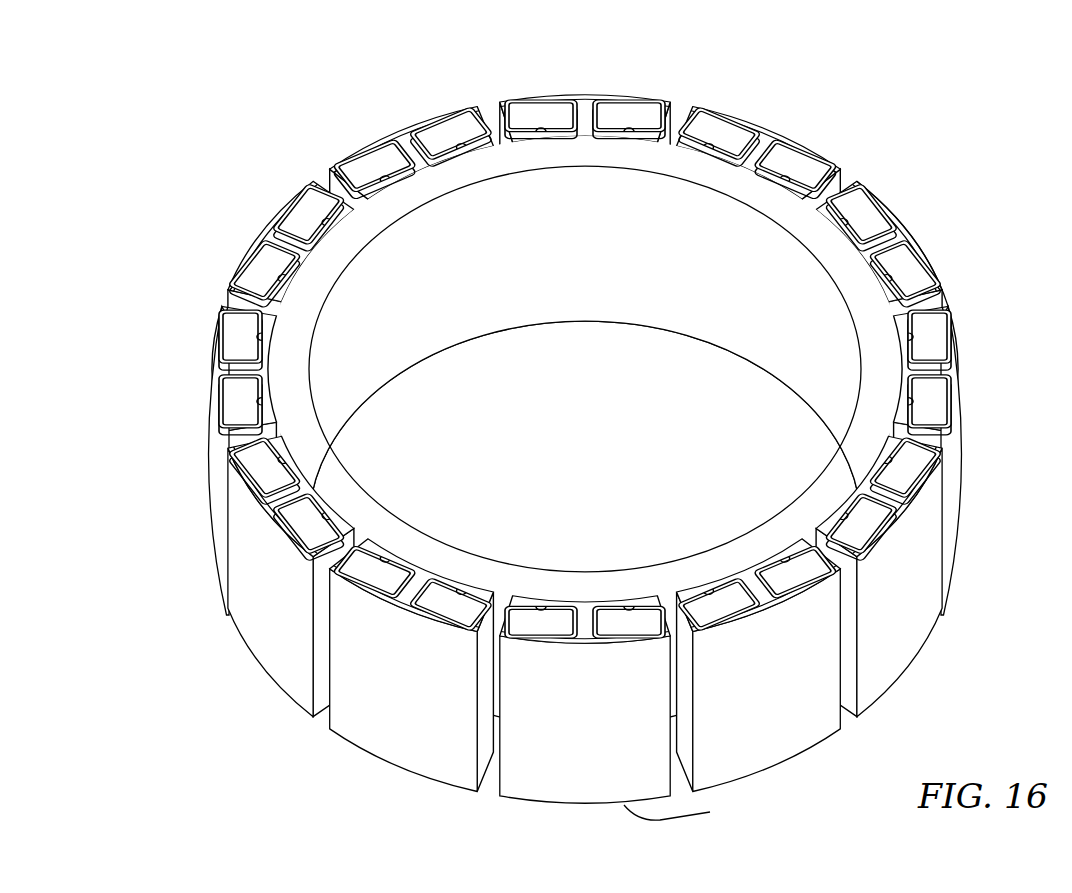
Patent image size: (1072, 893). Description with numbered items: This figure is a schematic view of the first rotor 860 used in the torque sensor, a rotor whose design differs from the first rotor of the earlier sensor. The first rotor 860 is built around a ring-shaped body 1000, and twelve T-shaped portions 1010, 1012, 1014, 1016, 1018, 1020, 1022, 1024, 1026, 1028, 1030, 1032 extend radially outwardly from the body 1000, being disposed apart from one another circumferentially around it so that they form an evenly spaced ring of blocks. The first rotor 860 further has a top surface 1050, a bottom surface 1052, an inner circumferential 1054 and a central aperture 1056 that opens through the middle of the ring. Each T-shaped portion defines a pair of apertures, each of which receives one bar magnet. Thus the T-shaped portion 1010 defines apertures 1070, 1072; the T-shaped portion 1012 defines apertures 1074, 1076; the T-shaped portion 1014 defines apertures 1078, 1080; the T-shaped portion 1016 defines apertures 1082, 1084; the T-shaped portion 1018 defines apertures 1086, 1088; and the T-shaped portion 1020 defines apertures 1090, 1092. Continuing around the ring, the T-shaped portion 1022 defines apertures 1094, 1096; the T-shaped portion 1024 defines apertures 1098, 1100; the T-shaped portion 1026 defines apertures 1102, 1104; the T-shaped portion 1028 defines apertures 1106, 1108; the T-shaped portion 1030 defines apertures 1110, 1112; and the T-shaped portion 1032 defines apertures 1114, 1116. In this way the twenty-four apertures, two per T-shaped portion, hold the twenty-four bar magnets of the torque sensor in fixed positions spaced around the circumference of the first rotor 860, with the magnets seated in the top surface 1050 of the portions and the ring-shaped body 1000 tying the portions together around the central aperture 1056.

The first rotor 860 is at (581, 441).
The ring-shaped body 1000 is at (658, 160).
The T-shaped portion 1010 is at (767, 140).
The T-shaped portion 1012 is at (917, 257).
The T-shaped portion 1014 is at (950, 372).
The T-shaped portion 1016 is at (890, 517).
The T-shaped portion 1018 is at (740, 620).
The T-shaped portion 1020 is at (562, 642).
The T-shaped portion 1022 is at (410, 608).
The T-shaped portion 1024 is at (270, 507).
The T-shaped portion 1026 is at (217, 383).
The T-shaped portion 1028 is at (255, 255).
The T-shaped portion 1030 is at (400, 142).
The T-shaped portion 1032 is at (582, 103).
The top surface 1050 is at (857, 200).
The bottom surface 1052 is at (705, 812).
The inner circumferential 1054 is at (550, 308).
The central aperture 1056 is at (585, 422).
The aperture 1070 is at (708, 146).
The aperture 1072 is at (786, 180).
The aperture 1074 is at (842, 221).
The aperture 1076 is at (888, 279).
The aperture 1078 is at (909, 336).
The aperture 1080 is at (909, 402).
The aperture 1082 is at (888, 459).
The aperture 1084 is at (842, 517).
The aperture 1086 is at (786, 558).
The aperture 1088 is at (708, 592).
The aperture 1090 is at (631, 607).
The aperture 1092 is at (539, 607).
The aperture 1094 is at (462, 592).
The aperture 1096 is at (384, 558).
The aperture 1098 is at (328, 517).
The aperture 1100 is at (282, 459).
The aperture 1102 is at (261, 402).
The aperture 1104 is at (261, 336).
The aperture 1106 is at (282, 279).
The aperture 1108 is at (328, 221).
The aperture 1110 is at (384, 180).
The aperture 1112 is at (462, 146).
The aperture 1114 is at (539, 131).
The aperture 1116 is at (631, 131).